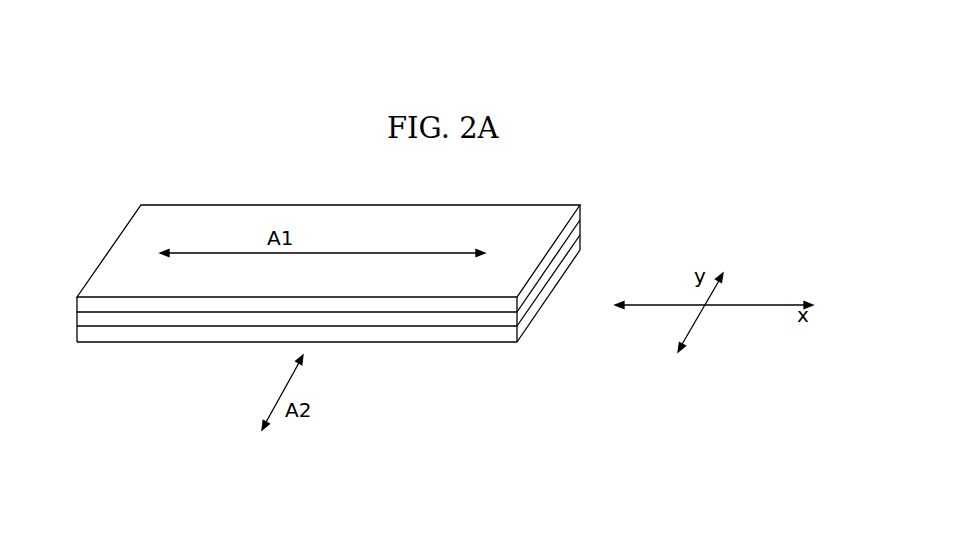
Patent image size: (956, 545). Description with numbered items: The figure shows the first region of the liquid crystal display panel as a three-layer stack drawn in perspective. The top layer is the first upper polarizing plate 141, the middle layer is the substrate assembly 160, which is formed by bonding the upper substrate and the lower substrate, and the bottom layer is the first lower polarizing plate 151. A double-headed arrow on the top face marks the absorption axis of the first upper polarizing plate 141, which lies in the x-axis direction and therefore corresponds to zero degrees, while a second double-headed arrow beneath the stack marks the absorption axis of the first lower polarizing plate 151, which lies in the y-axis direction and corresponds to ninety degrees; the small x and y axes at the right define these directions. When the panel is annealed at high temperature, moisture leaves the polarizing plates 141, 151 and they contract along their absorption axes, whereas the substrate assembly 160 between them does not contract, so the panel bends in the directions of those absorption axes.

The first upper polarizing plate 141 is at (582, 211).
The substrate assembly 160 is at (582, 232).
The first lower polarizing plate 151 is at (582, 247).